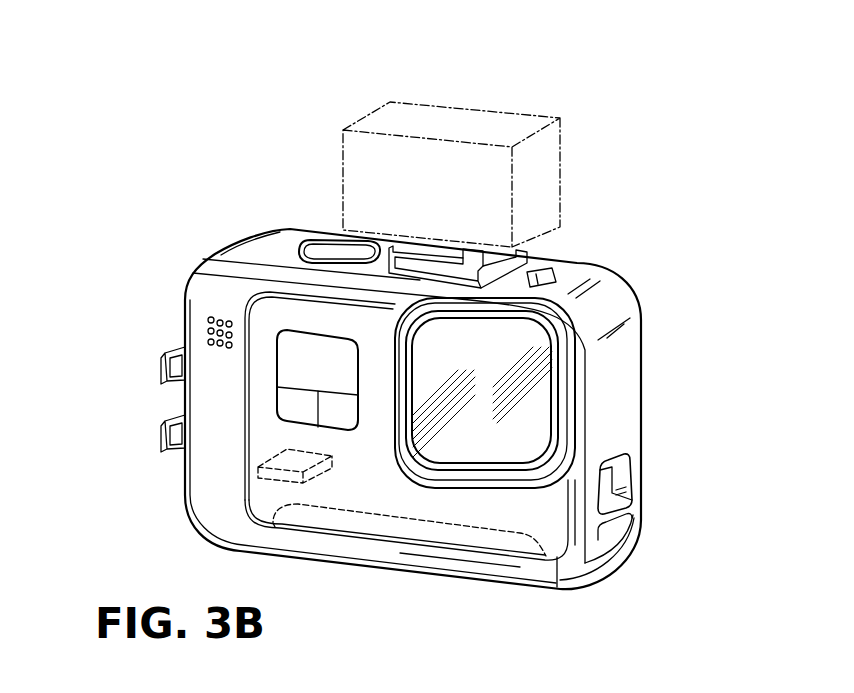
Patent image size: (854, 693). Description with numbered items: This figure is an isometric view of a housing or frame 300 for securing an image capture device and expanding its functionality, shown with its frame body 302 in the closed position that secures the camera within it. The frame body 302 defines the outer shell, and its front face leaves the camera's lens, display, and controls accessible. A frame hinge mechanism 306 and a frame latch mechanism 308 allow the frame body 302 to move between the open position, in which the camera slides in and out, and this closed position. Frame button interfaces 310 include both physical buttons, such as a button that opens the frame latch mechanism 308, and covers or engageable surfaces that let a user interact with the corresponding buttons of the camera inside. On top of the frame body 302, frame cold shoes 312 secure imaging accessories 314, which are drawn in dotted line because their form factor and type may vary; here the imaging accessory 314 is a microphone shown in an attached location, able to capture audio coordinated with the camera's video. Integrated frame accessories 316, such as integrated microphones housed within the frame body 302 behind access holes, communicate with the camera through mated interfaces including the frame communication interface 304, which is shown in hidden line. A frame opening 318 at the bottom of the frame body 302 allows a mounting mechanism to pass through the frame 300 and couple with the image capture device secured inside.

The frame 300 is at (187, 156).
The frame body 302 is at (224, 249).
The frame communication interface 304 is at (257, 478).
The frame hinge mechanism 306 is at (546, 278).
The frame latch mechanism 308 is at (560, 587).
The frame button interfaces 310 is at (323, 246).
The frame cold shoes 312 is at (530, 263).
The imaging accessories 314 is at (486, 129).
The integrated frame accessories 316 is at (206, 333).
The frame opening 318 is at (482, 567).